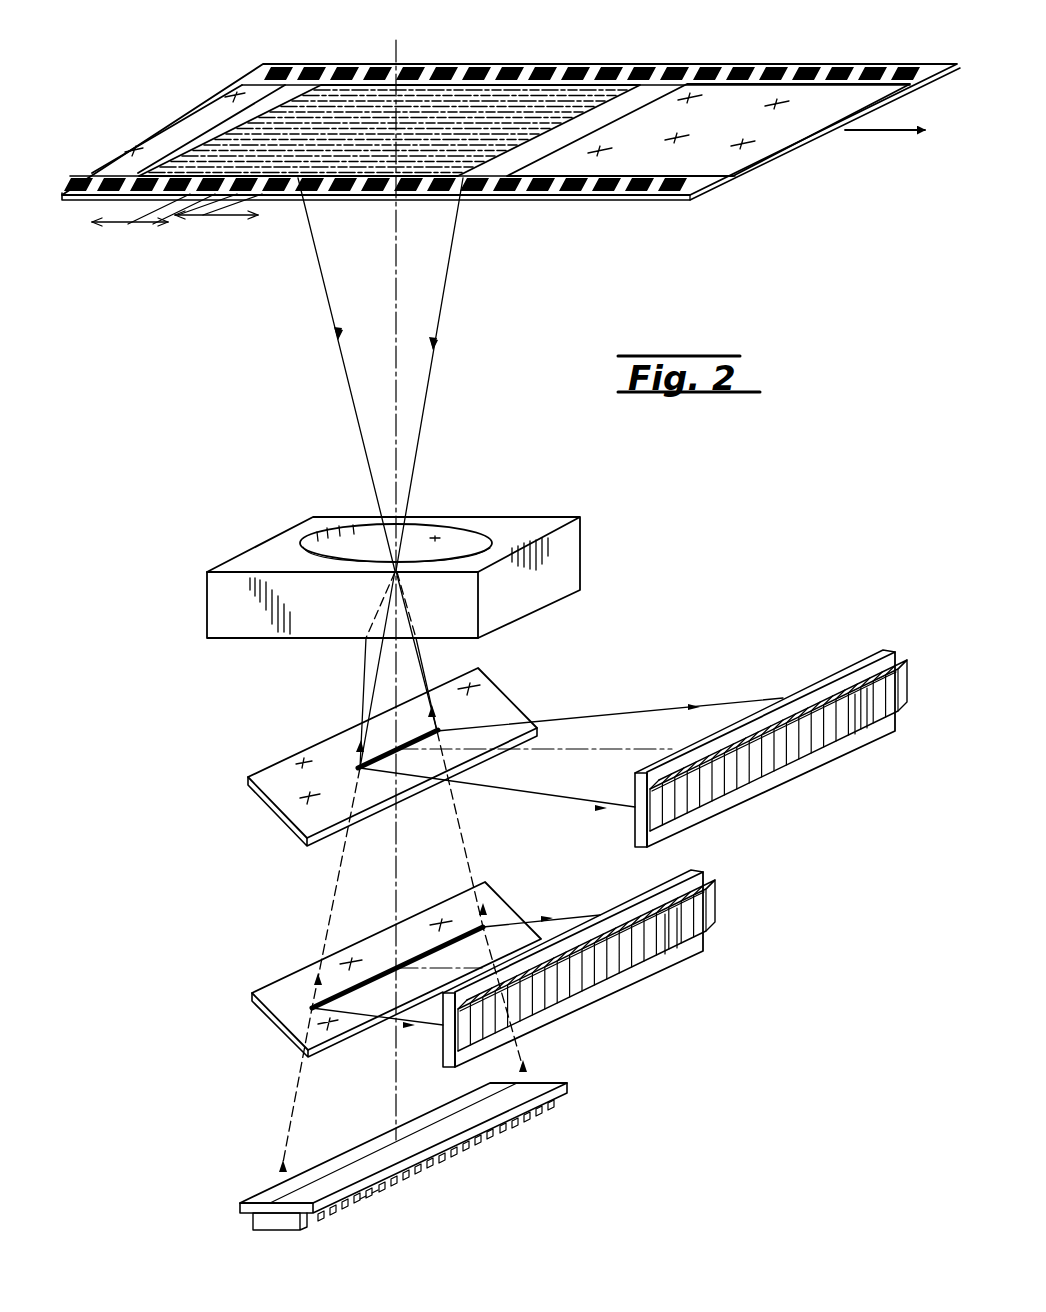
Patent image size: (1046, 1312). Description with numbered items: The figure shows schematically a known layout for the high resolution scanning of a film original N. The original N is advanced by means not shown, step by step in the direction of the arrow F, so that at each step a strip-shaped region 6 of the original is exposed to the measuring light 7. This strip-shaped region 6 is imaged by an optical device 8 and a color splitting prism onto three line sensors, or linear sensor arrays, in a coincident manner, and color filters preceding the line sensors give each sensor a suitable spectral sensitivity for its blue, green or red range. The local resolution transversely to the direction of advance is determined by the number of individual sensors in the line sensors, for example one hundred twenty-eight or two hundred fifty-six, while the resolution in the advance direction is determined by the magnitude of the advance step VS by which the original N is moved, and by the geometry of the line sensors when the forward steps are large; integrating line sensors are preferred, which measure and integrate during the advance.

The image field of film frame 6 is at (420, 110).
The copy original N is at (548, 83).
The light beam 7 is at (448, 292).
The perforation offset VS is at (207, 213).
The film transport direction F is at (862, 134).
The objective lens 8 is at (578, 553).